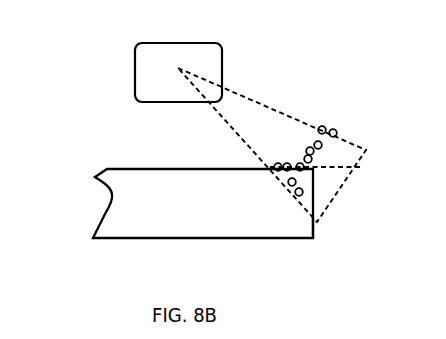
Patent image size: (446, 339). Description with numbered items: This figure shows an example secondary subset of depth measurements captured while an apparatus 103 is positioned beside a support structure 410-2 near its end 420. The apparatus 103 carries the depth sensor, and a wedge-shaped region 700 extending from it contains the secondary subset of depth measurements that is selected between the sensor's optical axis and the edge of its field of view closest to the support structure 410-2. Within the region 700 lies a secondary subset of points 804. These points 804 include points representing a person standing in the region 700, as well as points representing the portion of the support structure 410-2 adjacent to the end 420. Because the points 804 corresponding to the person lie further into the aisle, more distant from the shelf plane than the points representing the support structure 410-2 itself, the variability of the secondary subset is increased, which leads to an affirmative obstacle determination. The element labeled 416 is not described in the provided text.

The apparatus 103 is at (135, 72).
The region 700 is at (258, 135).
The secondary subset of points 804 is at (337, 131).
The edge 416 is at (330, 168).
The end 420 is at (315, 228).
The support structure 410-2 is at (167, 227).